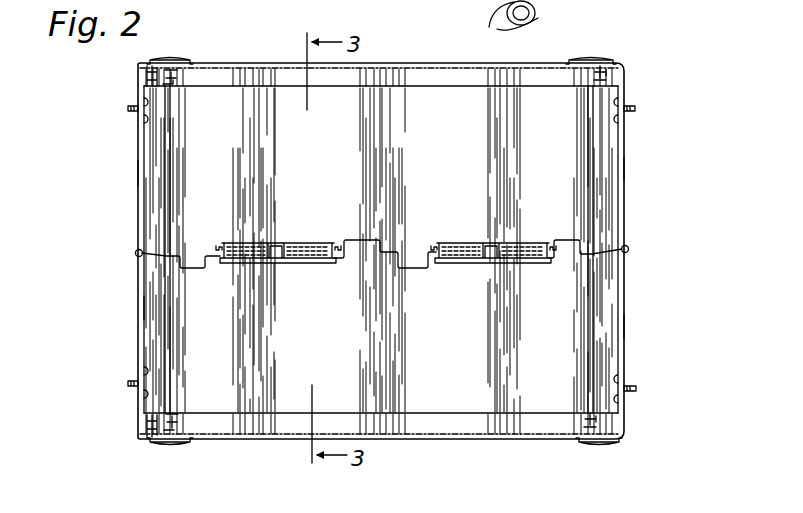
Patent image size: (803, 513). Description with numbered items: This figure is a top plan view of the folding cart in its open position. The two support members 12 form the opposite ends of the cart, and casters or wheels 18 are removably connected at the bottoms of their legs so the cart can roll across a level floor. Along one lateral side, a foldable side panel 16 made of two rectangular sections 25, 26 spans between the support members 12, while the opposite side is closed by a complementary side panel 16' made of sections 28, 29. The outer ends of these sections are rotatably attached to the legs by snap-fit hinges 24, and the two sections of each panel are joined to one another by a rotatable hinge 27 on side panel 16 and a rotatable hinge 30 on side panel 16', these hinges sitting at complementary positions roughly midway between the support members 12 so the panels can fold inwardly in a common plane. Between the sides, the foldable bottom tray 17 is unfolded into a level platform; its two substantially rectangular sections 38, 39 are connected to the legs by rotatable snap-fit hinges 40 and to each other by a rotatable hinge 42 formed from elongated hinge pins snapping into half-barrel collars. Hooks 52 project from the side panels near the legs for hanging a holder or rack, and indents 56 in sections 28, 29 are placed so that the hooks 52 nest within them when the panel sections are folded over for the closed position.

The support member 12 is at (405, 62).
The side panel 16 is at (114, 249).
The side panel 16' is at (643, 249).
The tray 17 is at (577, 321).
The caster 18 is at (152, 60).
The rotatable hinge 24 is at (147, 76).
The section 25 is at (144, 308).
The section 26 is at (139, 172).
The rotatable hinge 27 is at (133, 253).
The section 28 is at (624, 327).
The section 29 is at (626, 170).
The rotatable hinge 30 is at (632, 249).
The section 38 is at (440, 336).
The section 39 is at (449, 189).
The rotatable snap fit hinge 40 is at (176, 78).
The rotatable hinge 42 is at (530, 240).
The hook 52 is at (128, 108).
The indent 56 is at (145, 120).